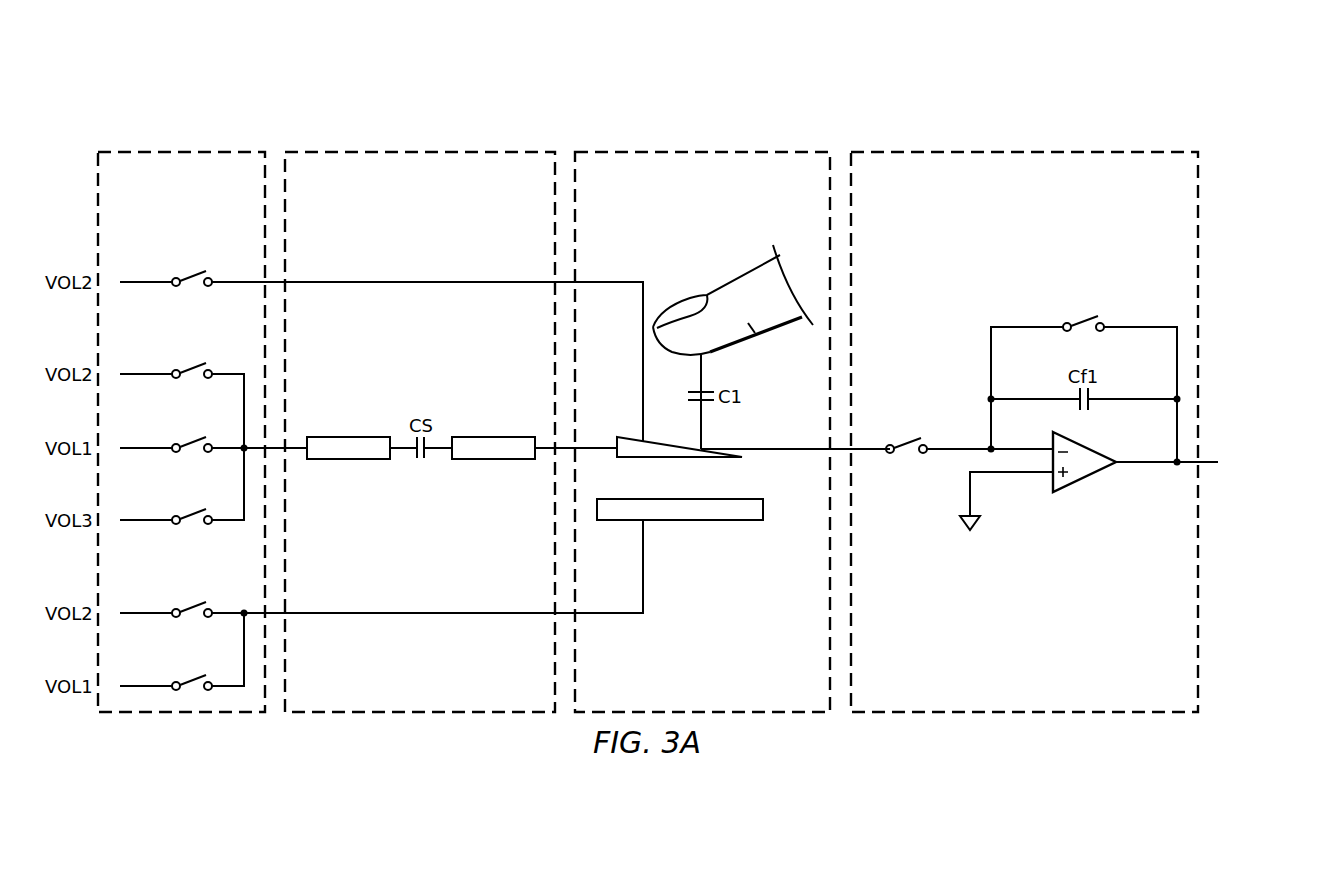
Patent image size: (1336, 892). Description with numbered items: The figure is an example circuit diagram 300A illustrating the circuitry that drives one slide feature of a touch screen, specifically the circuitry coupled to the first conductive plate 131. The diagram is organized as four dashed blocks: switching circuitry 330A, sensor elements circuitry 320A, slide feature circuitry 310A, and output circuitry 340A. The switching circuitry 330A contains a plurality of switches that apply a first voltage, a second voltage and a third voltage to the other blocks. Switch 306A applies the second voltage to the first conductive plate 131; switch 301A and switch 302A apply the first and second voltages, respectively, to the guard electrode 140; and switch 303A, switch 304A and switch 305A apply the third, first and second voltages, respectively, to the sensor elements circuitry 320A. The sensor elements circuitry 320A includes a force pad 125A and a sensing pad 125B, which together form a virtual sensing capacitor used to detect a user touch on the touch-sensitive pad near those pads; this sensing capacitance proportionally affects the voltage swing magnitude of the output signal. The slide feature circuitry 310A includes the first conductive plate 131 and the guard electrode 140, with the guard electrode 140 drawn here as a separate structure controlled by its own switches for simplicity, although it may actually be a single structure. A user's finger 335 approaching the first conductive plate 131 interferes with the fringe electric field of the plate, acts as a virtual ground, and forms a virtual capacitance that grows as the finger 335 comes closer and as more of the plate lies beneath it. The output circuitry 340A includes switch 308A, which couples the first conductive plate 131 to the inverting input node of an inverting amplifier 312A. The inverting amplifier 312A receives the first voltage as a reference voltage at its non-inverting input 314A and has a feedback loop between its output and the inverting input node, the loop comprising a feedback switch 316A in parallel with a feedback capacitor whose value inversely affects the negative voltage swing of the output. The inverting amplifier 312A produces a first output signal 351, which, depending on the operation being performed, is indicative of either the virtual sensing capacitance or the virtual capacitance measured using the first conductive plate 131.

The circuit diagram 300A is at (850, 56).
The switching circuitry 330A is at (160, 150).
The sensor elements circuitry 320A is at (388, 150).
The slide feature circuitry 310A is at (735, 150).
The output circuitry 340A is at (1055, 150).
The switch 306A is at (190, 273).
The switch 305A is at (190, 365).
The switch 304A is at (190, 439).
The switch 303A is at (190, 511).
The switch 302A is at (190, 604).
The switch 301A is at (190, 677).
The force pad 125A is at (348, 437).
The sensing pad 125B is at (497, 437).
The finger 335 is at (712, 288).
The first conductive plate 131 is at (725, 458).
The guard electrode 140 is at (692, 522).
The switch 308A is at (906, 444).
The feedback switch 316A is at (1087, 320).
The inverting amplifier 312A is at (1087, 480).
The non-inverting input 314A is at (1018, 475).
The first output signal 351 is at (1262, 489).